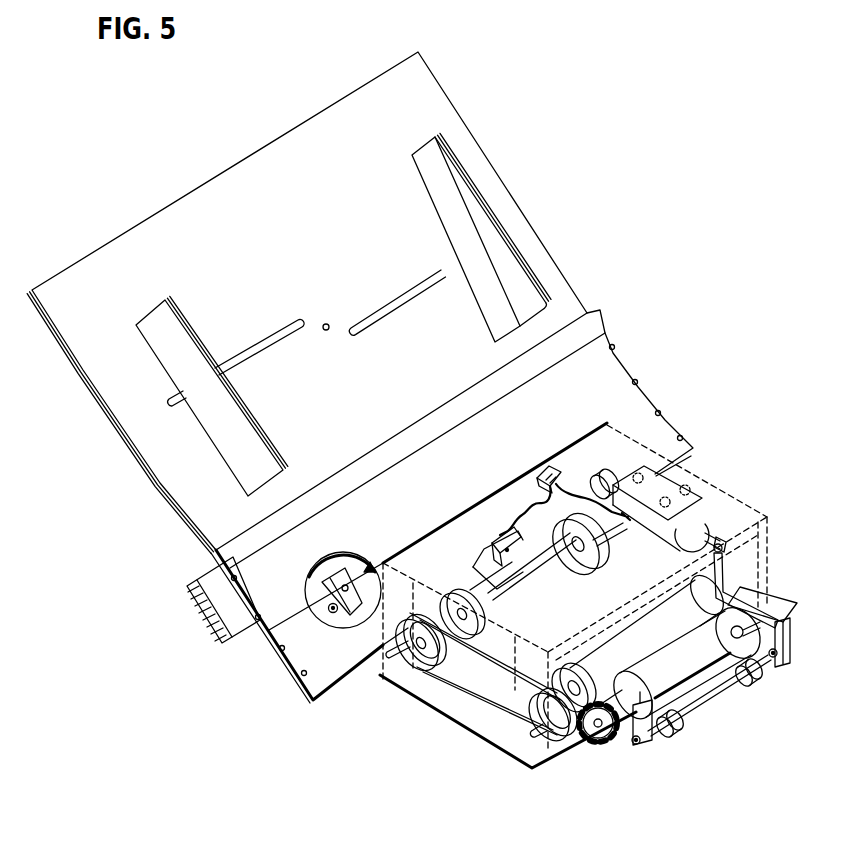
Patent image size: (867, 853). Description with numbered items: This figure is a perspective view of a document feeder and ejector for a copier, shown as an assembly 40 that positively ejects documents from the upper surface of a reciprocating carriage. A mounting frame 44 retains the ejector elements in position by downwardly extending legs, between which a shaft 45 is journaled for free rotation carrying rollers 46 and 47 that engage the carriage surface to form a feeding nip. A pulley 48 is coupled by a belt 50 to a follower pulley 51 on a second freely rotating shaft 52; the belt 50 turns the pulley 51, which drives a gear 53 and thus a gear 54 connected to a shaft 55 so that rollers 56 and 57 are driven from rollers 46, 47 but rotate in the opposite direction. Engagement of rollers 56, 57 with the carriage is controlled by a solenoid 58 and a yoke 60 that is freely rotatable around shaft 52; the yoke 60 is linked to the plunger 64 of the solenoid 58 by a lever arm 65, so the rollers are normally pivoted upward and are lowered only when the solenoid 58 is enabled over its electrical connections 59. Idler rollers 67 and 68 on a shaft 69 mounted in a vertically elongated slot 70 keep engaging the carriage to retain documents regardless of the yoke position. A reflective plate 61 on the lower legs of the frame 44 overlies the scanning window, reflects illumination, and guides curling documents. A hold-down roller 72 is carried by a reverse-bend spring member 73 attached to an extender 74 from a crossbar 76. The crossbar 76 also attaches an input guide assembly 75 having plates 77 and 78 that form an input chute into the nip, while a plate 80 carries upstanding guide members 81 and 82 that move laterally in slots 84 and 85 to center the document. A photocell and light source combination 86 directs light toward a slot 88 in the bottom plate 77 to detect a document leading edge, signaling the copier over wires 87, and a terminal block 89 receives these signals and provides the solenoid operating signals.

The assembly 40 is at (712, 457).
The mounting frame 44 is at (745, 502).
The shaft 45 is at (543, 566).
The roller 46 is at (490, 617).
The roller 47 is at (590, 553).
The pulley 48 is at (433, 663).
The belt 50 is at (481, 686).
The follower pulley 51 is at (560, 742).
The shaft 52 is at (531, 735).
The gear 53 is at (579, 672).
The gear 54 is at (609, 745).
The shaft 55 is at (647, 636).
The roller 56 is at (656, 698).
The roller 57 is at (730, 667).
The solenoid 58 is at (697, 518).
The electrical connections 59 is at (575, 492).
The yoke 60 is at (783, 618).
The reflective plate 61 is at (480, 732).
The plunger 64 is at (712, 542).
The lever arm 65 is at (730, 577).
The idler roller 67 is at (679, 727).
The idler roller 68 is at (752, 684).
The shaft 69 is at (713, 697).
The vertically elongated slot 70 is at (641, 743).
The roller 72 is at (333, 614).
The reverse-bend spring member 73 is at (360, 613).
The extender 74 is at (347, 573).
The input guide assembly 75 is at (556, 232).
The crossbar 76 is at (223, 636).
The plate 77 is at (321, 692).
The plate 78 is at (335, 660).
The plate 80 is at (157, 230).
The upstanding guide member 81 is at (177, 333).
The upstanding guide member 82 is at (410, 198).
The slot 84 is at (272, 340).
The slot 85 is at (380, 312).
The photocell and light source combination 86 is at (500, 543).
The wires 87 is at (527, 508).
The slot 88 is at (492, 580).
The terminal block 89 is at (543, 468).